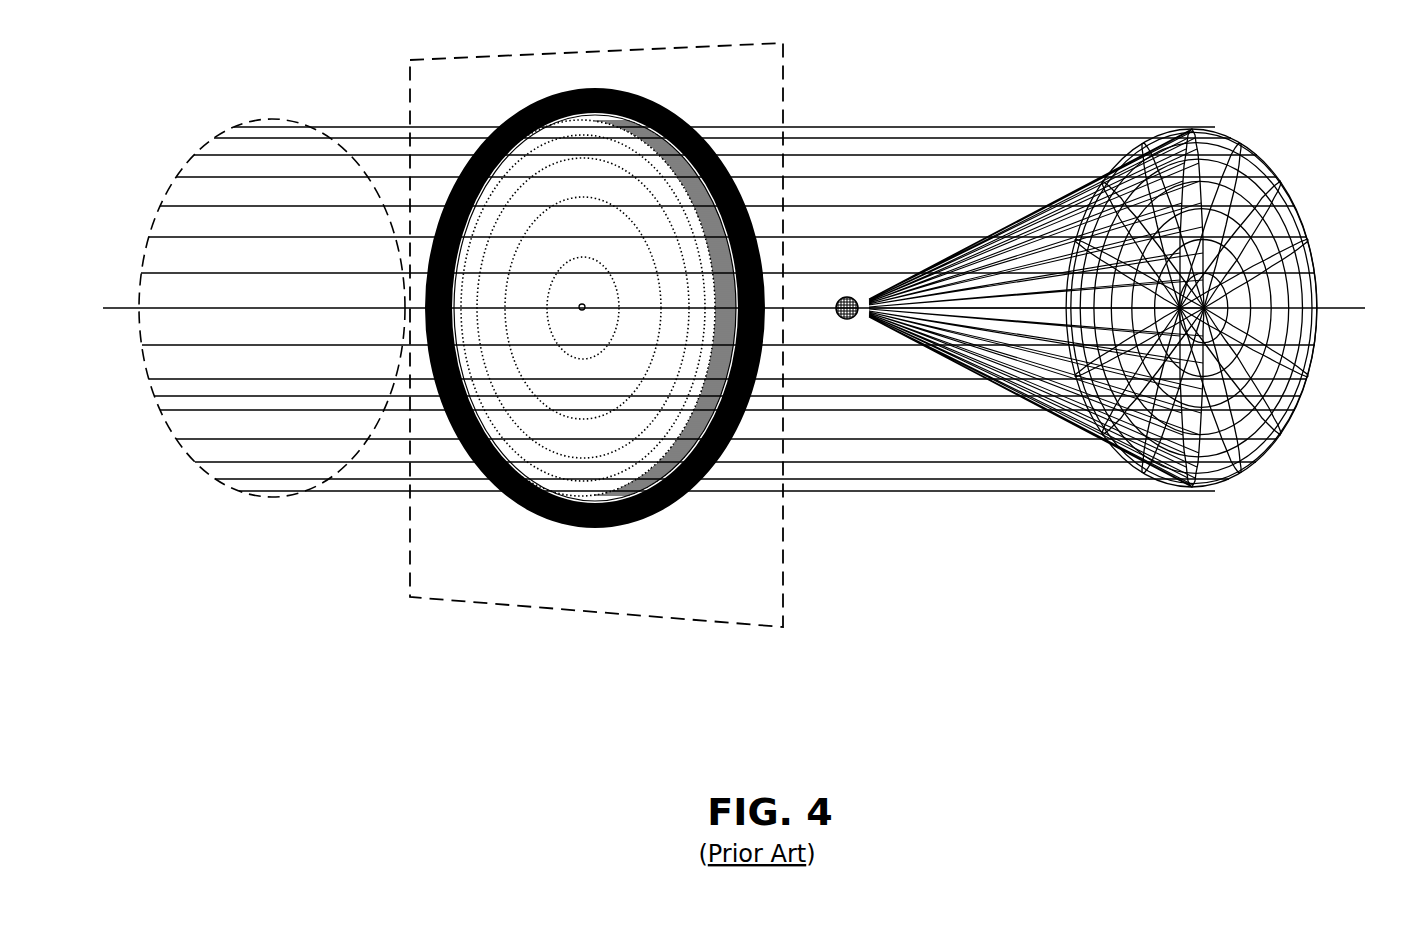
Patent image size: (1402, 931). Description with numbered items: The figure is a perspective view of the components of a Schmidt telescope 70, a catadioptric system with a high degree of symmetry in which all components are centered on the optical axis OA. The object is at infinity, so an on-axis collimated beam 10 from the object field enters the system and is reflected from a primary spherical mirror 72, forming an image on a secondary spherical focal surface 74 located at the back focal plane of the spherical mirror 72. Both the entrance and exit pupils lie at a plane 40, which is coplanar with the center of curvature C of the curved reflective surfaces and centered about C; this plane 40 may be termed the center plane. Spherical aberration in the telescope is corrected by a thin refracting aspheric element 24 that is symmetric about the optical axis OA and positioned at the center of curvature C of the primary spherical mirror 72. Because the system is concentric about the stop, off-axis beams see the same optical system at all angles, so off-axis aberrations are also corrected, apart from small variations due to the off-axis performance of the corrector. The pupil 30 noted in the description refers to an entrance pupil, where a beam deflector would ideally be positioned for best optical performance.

The on-axis collimated beam 10 is at (342, 493).
The thin refracting aspheric element 24 is at (628, 455).
The entrance pupil 30 is at (512, 500).
The plane 40 is at (407, 68).
The Schmidt telescope 70 is at (1036, 259).
The primary spherical mirror 72 is at (1262, 165).
The secondary spherical focal surface 74 is at (851, 320).
The center of curvature C is at (576, 307).
The optical axis OA is at (815, 308).